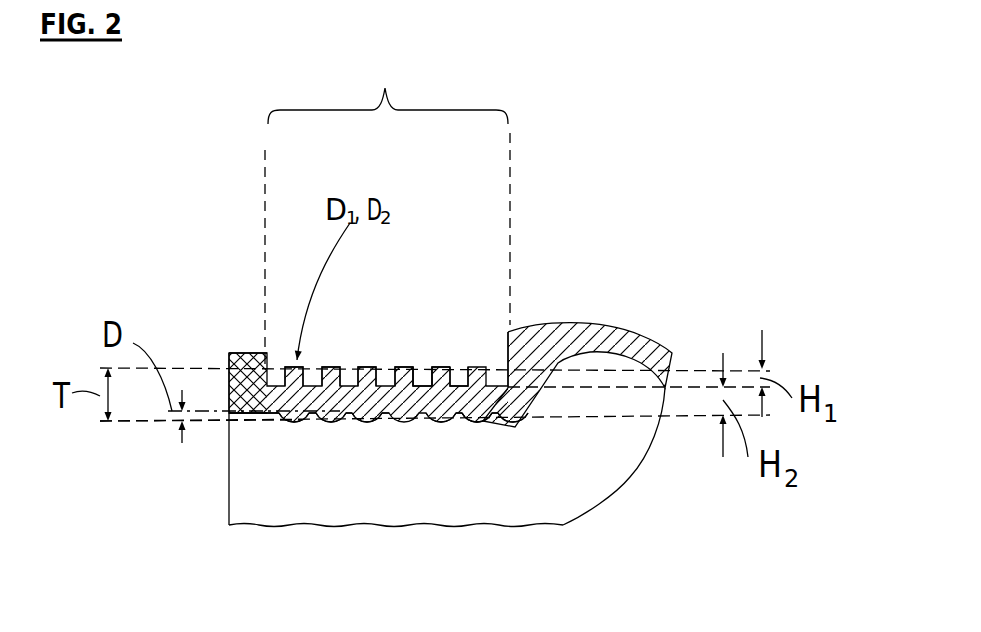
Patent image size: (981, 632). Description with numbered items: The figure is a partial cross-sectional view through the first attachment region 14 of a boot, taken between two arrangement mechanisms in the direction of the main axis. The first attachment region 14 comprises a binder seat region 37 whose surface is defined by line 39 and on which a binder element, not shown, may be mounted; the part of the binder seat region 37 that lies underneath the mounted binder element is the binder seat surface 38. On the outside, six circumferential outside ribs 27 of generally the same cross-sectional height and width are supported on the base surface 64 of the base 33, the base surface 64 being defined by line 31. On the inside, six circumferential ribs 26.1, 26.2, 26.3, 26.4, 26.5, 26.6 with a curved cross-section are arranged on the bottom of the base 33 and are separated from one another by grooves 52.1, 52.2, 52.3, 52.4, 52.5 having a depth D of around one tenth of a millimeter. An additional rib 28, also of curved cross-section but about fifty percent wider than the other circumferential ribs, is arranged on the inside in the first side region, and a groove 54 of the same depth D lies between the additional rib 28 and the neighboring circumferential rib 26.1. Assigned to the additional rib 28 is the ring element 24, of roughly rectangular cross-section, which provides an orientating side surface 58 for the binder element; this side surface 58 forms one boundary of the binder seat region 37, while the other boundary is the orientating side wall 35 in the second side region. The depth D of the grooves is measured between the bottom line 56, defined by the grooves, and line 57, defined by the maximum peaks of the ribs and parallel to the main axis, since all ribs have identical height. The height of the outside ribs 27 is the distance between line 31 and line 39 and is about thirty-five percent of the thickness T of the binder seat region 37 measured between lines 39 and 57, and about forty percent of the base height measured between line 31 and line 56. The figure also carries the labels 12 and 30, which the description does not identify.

The housing part 12 is at (653, 297).
The first attachment region 14 is at (290, 193).
The ring element 24 is at (242, 350).
The circumferential rib 26.1 is at (312, 422).
The circumferential rib 26.2 is at (353, 422).
The circumferential rib 26.3 is at (407, 422).
The circumferential rib 26.4 is at (447, 418).
The circumferential rib 26.5 is at (475, 425).
The circumferential rib 26.6 is at (502, 420).
The circumferential outside ribs 27 is at (372, 367).
The additional rib 28 is at (250, 423).
The tooth flank 30 is at (428, 367).
The line 31 is at (695, 385).
The base 33 is at (422, 367).
The orientating side wall 35 is at (506, 347).
The binder seat region 37 is at (388, 84).
The binder seat surface 38 is at (403, 360).
The line 39 is at (328, 360).
The groove 52.1 is at (330, 420).
The groove 52.2 is at (367, 420).
The groove 52.3 is at (433, 422).
The groove 52.4 is at (460, 422).
The groove 52.5 is at (483, 423).
The groove 54 is at (290, 417).
The bottom line 56 is at (227, 380).
The line 57 is at (120, 423).
The orientating side surface 58 is at (275, 356).
The base surface 64 is at (463, 367).